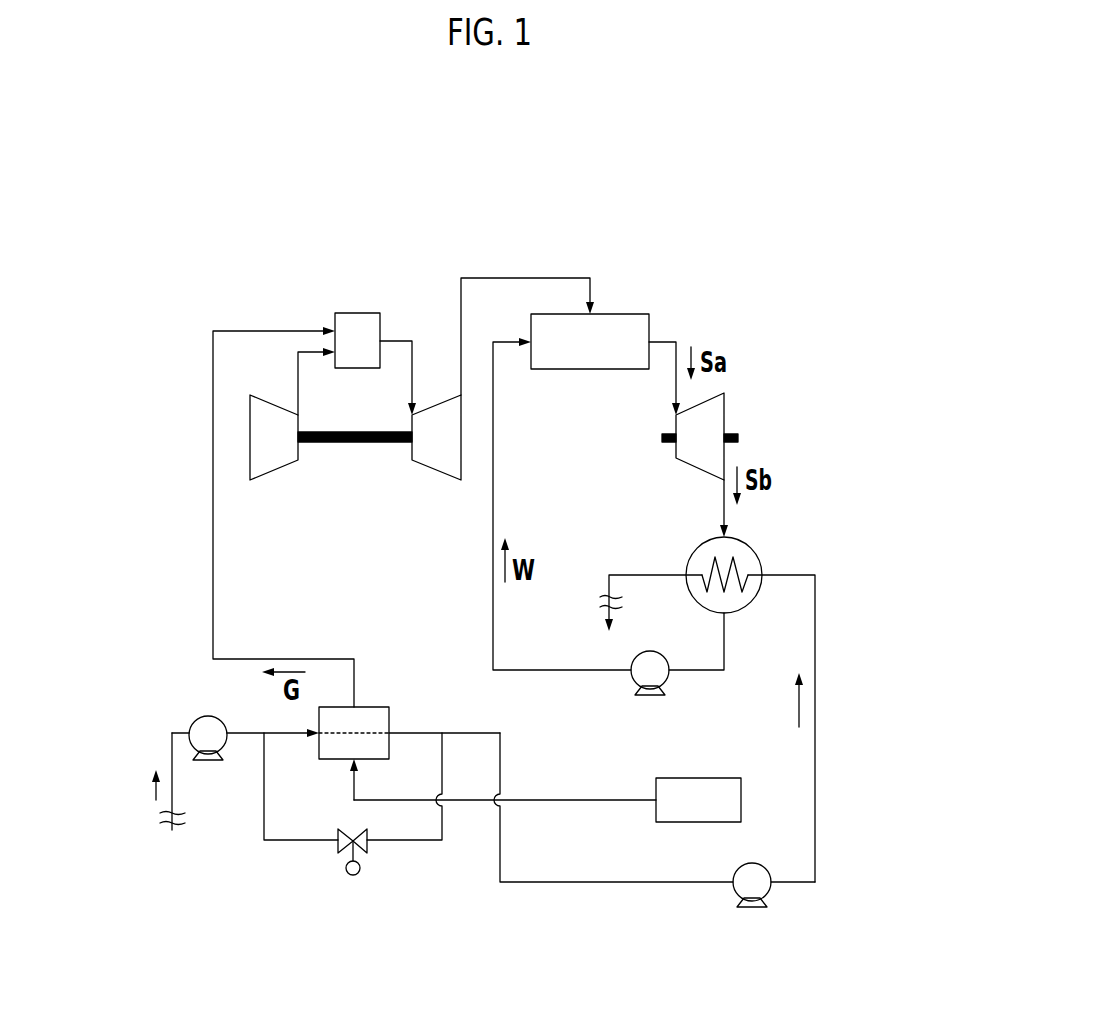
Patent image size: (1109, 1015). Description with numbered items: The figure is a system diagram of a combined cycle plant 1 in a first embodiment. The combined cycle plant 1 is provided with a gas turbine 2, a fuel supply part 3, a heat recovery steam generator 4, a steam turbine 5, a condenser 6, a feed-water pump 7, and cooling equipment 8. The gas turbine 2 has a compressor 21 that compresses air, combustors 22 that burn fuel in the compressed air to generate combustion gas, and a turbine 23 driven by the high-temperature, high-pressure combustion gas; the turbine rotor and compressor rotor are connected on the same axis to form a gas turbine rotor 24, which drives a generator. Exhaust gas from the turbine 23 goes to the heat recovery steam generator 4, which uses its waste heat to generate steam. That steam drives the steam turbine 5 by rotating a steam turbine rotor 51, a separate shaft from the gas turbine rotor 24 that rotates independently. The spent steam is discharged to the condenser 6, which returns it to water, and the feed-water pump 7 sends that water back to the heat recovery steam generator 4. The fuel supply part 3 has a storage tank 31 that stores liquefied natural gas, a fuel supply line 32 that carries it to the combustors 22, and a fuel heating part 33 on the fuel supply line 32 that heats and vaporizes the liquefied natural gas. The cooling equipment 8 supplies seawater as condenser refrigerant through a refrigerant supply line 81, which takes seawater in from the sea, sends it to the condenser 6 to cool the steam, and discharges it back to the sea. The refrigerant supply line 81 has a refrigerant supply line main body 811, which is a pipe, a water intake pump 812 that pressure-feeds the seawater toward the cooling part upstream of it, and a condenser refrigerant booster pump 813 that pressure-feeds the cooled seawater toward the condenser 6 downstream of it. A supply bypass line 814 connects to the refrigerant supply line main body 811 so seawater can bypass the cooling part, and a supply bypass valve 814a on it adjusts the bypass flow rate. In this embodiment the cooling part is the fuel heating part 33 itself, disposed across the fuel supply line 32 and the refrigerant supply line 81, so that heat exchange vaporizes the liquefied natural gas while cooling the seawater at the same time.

The combined cycle plant 1 is at (729, 262).
The gas turbine 2 is at (401, 288).
The compressor 21 is at (273, 462).
The combustor 22 is at (352, 313).
The turbine 23 is at (438, 461).
The gas turbine rotor 24 is at (354, 443).
The fuel supply part 3 is at (615, 787).
The storage tank 31 is at (702, 786).
The fuel supply line 32 is at (215, 590).
The fuel heating part 33 is at (372, 705).
The heat recovery steam generator 4 is at (627, 323).
The steam turbine 5 is at (757, 445).
The steam turbine rotor 51 is at (668, 447).
The condenser 6 is at (743, 547).
The feed-water pump 7 is at (662, 676).
The cooling equipment 8 is at (697, 778).
The refrigerant supply line 81 is at (827, 785).
The refrigerant supply line main body 811 is at (672, 884).
The water intake pump 812 is at (210, 751).
The condenser refrigerant booster pump 813 is at (755, 893).
The supply bypass line 814 is at (400, 843).
The supply bypass valve 814a is at (340, 845).